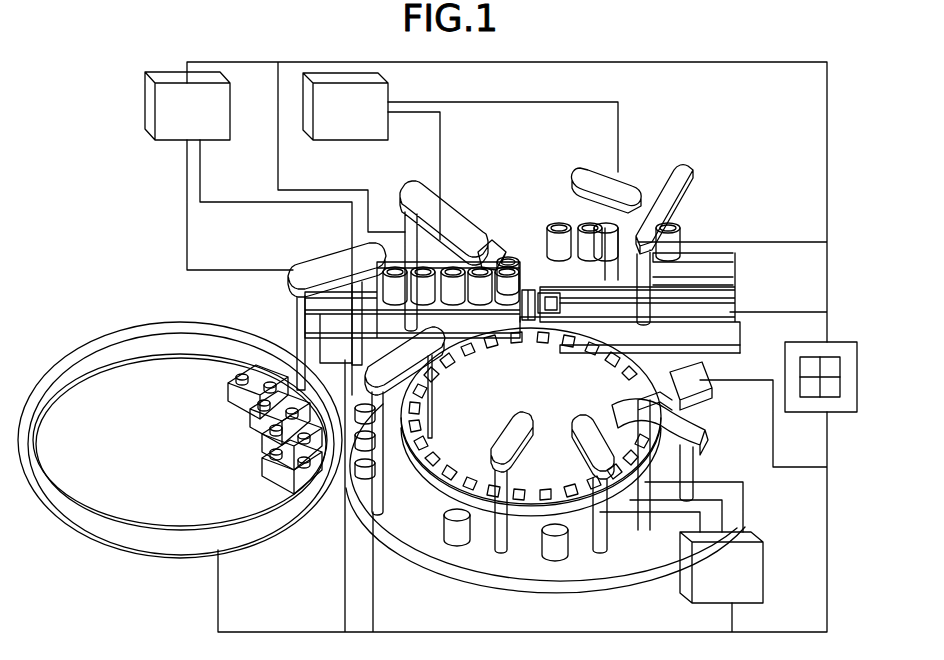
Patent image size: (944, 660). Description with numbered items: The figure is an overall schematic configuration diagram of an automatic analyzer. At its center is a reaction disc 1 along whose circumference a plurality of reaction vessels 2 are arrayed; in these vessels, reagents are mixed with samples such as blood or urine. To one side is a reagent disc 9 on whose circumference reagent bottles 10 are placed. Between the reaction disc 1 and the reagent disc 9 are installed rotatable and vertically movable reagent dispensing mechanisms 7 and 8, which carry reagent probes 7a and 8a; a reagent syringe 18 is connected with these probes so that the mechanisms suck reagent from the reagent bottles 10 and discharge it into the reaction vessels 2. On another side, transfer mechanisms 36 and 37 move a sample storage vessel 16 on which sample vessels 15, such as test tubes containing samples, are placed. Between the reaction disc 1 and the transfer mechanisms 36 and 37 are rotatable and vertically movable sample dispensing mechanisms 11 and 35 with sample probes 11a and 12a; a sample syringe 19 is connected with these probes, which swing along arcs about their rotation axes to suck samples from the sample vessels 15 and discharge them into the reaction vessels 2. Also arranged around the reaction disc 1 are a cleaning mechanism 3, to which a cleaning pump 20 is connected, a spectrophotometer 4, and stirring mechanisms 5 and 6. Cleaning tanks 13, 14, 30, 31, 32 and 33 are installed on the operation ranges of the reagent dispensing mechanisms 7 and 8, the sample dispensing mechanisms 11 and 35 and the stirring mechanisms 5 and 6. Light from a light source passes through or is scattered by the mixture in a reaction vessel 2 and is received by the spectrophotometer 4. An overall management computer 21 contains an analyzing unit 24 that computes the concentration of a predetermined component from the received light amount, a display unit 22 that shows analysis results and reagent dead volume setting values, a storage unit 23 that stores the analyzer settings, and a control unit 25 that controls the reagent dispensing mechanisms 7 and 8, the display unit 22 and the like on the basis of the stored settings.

The reaction disc 1 is at (415, 490).
The reaction vessels 2 is at (458, 480).
The cleaning mechanism 3 is at (705, 430).
The spectrophotometer 4 is at (714, 380).
The stirring mechanism 5 is at (625, 518).
The stirring mechanism 6 is at (477, 560).
The reagent dispensing mechanism 7 is at (360, 490).
The reagent probe 7a is at (382, 500).
The reagent dispensing mechanism 8 is at (298, 264).
The reagent probe 8a is at (293, 324).
The reagent disc 9 is at (156, 323).
The reagent bottles 10 is at (268, 467).
The sample dispensing mechanism 11 is at (408, 192).
The sample probe 11a is at (490, 245).
The sample probe 12a is at (578, 240).
The cleaning tank 13 is at (509, 262).
The cleaning tank 14 is at (534, 292).
The sample vessels 15 is at (735, 242).
The sample storage vessel 16 is at (680, 270).
The reagent syringe 18 is at (195, 104).
The sample syringe 19 is at (312, 120).
The cleaning pump 20 is at (742, 582).
The overall management computer 21 is at (860, 400).
The display unit 22 is at (836, 357).
The storage unit 23 is at (810, 358).
The analyzing unit 24 is at (838, 390).
The control unit 25 is at (806, 398).
The cleaning tank 30 is at (548, 560).
The cleaning tank 31 is at (460, 546).
The cleaning tank 32 is at (340, 495).
The cleaning tank 33 is at (358, 505).
The sample dispensing mechanism 35 is at (672, 182).
The transfer mechanism 36 is at (692, 347).
The transfer mechanism 37 is at (740, 263).